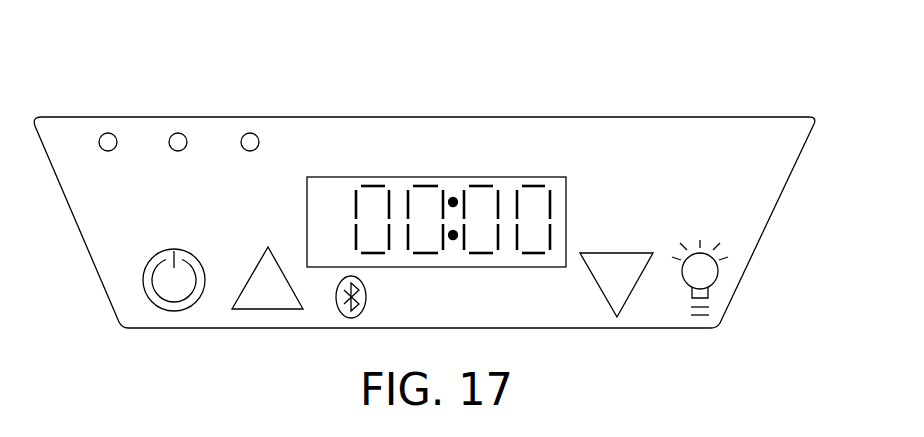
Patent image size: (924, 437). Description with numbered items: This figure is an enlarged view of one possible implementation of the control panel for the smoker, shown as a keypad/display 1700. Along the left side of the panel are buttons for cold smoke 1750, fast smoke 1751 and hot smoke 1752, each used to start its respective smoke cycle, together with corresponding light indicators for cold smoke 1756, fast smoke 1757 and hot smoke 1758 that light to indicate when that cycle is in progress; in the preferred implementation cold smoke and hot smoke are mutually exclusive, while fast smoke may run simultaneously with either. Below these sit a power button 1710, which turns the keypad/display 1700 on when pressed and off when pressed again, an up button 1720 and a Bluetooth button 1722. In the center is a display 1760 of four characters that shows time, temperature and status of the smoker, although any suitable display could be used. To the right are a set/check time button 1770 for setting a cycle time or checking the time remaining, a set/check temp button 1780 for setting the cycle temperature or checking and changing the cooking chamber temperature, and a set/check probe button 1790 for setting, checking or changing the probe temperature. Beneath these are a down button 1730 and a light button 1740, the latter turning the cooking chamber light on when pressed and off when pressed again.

The keypad/display 1700 is at (866, 70).
The power button 1710 is at (150, 262).
The up button 1720 is at (255, 265).
The Bluetooth button 1722 is at (367, 297).
The down button 1730 is at (622, 252).
The light button 1740 is at (717, 254).
The cold smoke button 1750 is at (85, 168).
The fast smoke button 1751 is at (157, 168).
The hot smoke button 1752 is at (228, 168).
The cold smoke indicator 1756 is at (101, 135).
The fast smoke indicator 1757 is at (171, 135).
The hot smoke indicator 1758 is at (243, 135).
The display 1760 is at (450, 176).
The set/check time button 1770 is at (603, 133).
The set/check temp button 1780 is at (678, 133).
The set/check probe button 1790 is at (750, 133).